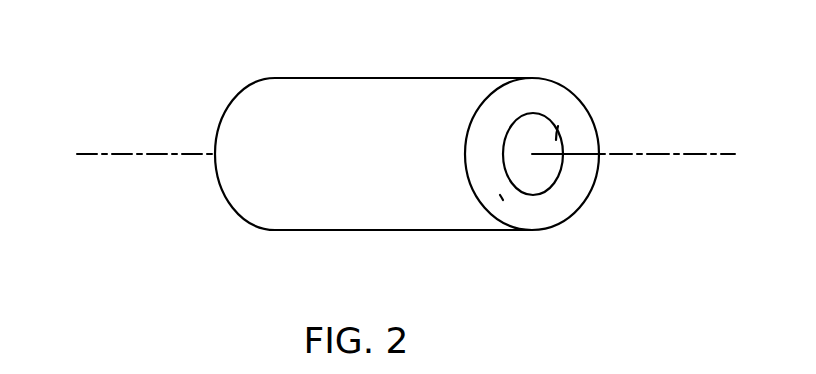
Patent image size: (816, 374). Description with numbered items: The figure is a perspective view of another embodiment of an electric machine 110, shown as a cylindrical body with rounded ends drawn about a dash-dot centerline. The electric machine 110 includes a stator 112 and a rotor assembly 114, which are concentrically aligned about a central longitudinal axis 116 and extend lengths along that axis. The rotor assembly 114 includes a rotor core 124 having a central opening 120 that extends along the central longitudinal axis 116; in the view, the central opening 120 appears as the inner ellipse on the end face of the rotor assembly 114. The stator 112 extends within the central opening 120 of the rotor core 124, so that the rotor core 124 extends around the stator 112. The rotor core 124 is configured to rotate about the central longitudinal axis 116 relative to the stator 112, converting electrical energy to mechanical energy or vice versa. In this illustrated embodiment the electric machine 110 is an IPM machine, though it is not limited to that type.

The electric machine 110 is at (142, 90).
The stator 112 is at (542, 197).
The rotor assembly 114 is at (583, 94).
The central longitudinal axis 116 is at (677, 157).
The central opening 120 is at (556, 140).
The rotor core 124 is at (505, 200).